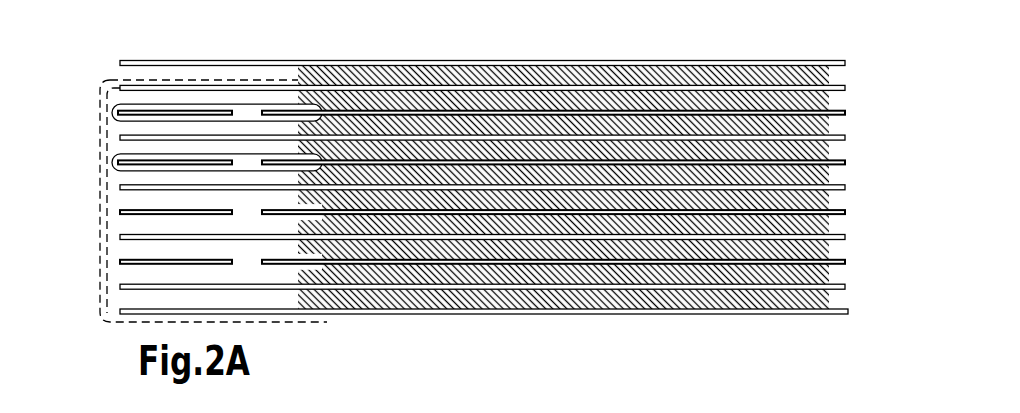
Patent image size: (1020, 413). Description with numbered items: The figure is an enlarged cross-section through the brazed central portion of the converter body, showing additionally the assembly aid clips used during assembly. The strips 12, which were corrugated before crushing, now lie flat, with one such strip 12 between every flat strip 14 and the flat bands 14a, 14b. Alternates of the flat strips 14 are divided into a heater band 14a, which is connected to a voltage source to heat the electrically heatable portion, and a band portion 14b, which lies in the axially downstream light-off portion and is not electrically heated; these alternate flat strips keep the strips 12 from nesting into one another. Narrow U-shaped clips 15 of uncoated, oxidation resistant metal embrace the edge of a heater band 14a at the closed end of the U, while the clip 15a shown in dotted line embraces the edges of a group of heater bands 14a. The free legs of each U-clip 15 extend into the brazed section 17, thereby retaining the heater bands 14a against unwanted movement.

The corrugated strip 12 is at (846, 87).
The flat strip 14 is at (846, 62).
The heater band 14a is at (120, 260).
The band portion 14b is at (846, 112).
The U-shaped clip 15 is at (175, 157).
The clip 15a is at (100, 283).
The brazed section 17 is at (592, 80).